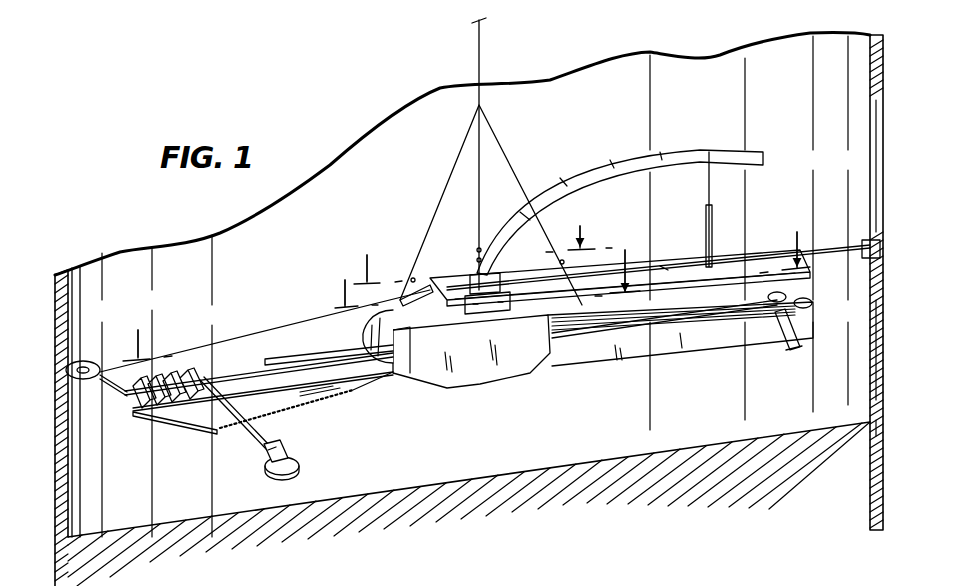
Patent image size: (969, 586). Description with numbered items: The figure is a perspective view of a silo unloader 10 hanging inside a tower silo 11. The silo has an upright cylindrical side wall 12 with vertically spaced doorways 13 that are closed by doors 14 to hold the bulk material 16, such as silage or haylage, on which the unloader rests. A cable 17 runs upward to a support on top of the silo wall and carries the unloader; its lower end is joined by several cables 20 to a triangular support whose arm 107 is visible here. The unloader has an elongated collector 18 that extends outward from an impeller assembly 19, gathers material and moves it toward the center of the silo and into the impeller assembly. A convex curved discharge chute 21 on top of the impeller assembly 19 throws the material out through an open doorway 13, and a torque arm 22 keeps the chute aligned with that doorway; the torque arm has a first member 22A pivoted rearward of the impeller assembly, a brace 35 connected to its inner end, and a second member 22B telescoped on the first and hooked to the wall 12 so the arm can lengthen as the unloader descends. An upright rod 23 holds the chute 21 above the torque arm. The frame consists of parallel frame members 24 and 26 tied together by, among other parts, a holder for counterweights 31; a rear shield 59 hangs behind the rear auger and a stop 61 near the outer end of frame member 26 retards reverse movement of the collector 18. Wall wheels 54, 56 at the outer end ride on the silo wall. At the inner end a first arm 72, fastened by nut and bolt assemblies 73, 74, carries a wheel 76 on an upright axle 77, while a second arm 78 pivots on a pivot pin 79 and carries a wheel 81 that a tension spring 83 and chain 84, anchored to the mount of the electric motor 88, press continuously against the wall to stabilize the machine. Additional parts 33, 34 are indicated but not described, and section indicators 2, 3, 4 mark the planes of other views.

The silo unloader 10 is at (370, 180).
The tower silo 11 is at (701, 50).
The side wall 12 is at (876, 431).
The doorways 13 is at (883, 148).
The doors 14 is at (876, 356).
The bulk material 16 is at (447, 504).
The cable 17 is at (481, 61).
The collector 18 is at (676, 307).
The impeller assembly 19 is at (490, 389).
The cables 20 is at (496, 138).
The discharge chute 21 is at (646, 156).
The torque arm 22 is at (733, 257).
The first member 22A is at (666, 269).
The second member 22B is at (841, 249).
The upright support or rod 23 is at (707, 194).
The frame member 24 is at (238, 375).
The frame member 26 is at (326, 411).
The holder for counterweights 31 is at (172, 375).
The bar 33 is at (305, 356).
The line 34 is at (322, 361).
The brace 35 is at (606, 263).
The wall wheel 54 is at (786, 297).
The wall wheel 56 is at (812, 304).
The rear shield 59 is at (613, 353).
The stop 61 is at (787, 358).
The first arm 72 is at (252, 441).
The nut and bolt assembly 73 is at (204, 378).
The nut and bolt assembly 74 is at (272, 400).
The wheel 76 is at (298, 464).
The upright axle 77 is at (268, 478).
The second arm 78 is at (88, 391).
The pivot pin 79 is at (140, 419).
The wheel 81 is at (84, 361).
The tension spring 83 is at (300, 419).
The chain 84 is at (333, 390).
The electric motor 88 is at (375, 331).
The arm 107 is at (448, 319).
The section line 2- 2 is at (467, 292).
The section line 3- 3 is at (483, 244).
The section line 4- 4 is at (487, 269).